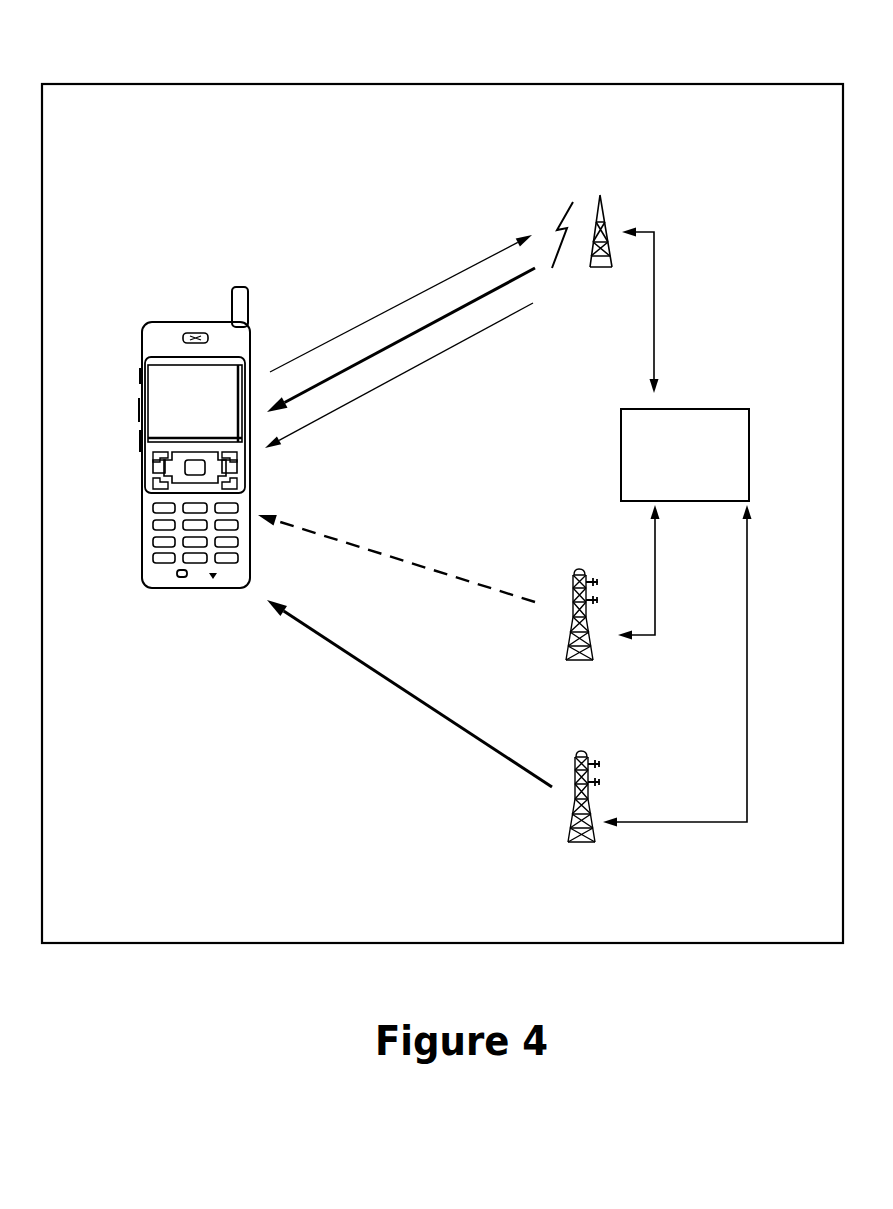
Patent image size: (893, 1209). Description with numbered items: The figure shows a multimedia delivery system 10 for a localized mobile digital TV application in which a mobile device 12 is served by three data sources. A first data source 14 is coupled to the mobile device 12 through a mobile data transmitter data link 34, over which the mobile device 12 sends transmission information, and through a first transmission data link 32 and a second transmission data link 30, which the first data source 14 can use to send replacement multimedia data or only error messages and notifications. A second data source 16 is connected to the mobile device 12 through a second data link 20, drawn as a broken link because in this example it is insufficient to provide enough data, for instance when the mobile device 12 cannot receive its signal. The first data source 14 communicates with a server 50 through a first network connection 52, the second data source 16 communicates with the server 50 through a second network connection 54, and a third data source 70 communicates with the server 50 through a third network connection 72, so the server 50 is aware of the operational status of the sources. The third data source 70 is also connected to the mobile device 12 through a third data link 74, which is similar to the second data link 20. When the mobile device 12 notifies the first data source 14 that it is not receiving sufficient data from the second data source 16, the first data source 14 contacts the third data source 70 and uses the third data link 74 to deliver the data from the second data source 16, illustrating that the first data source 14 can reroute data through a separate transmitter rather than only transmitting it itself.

The multimedia delivery system 10 is at (693, 84).
The mobile device 12 is at (203, 592).
The first data source 14 is at (582, 270).
The second data source 16 is at (590, 662).
The second data link 20 is at (418, 565).
The second transmission data link 30 is at (407, 372).
The first transmission data link 32 is at (485, 302).
The mobile data transmitter data link 34 is at (388, 313).
The server 50 is at (685, 407).
The first network connection 52 is at (654, 285).
The second network connection 54 is at (656, 585).
The third data source 70 is at (592, 843).
The third network connection 72 is at (747, 577).
The third data link 74 is at (420, 705).